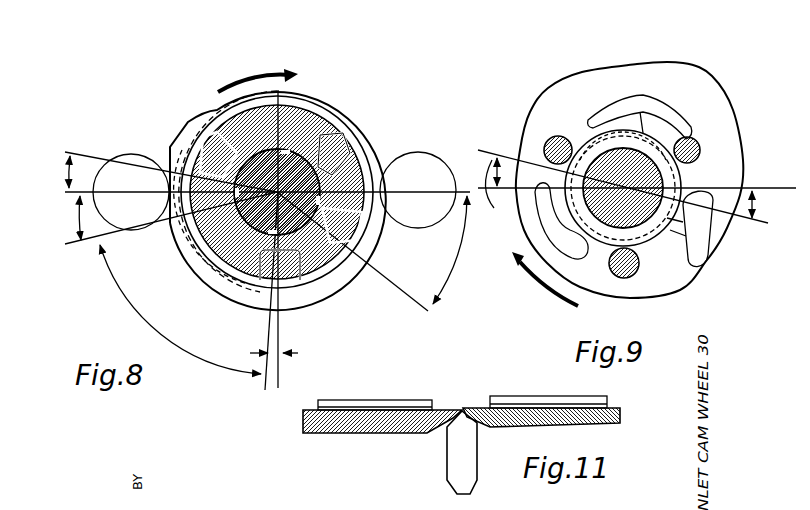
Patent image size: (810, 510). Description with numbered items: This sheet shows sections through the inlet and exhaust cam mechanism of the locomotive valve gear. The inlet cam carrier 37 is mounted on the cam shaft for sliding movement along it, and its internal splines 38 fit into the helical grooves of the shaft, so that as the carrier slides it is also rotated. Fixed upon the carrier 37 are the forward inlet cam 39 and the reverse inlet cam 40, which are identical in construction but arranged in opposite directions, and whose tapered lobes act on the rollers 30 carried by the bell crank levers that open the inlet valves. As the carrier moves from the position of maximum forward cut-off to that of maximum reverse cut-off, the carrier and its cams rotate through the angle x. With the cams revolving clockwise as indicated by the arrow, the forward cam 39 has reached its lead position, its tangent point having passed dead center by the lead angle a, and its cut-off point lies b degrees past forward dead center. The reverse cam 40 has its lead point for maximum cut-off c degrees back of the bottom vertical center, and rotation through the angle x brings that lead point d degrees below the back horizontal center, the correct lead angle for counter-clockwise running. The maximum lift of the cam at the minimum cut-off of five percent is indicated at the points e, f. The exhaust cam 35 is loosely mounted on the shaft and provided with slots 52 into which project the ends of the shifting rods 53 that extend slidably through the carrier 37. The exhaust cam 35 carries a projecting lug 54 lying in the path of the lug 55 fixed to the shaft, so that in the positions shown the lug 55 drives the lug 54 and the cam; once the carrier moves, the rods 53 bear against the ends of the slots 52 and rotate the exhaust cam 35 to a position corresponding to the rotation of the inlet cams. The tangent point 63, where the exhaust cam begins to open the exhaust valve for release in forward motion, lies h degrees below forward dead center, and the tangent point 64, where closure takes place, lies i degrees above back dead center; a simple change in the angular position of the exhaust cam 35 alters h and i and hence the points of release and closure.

In FIG. 8, the roller 30 is at (274, 191).
In FIG. 11, the roller 30 is at (450, 457).
In FIG. 9, the exhaust cam 35 is at (690, 100).
In FIG. 8, the inlet cam carrier 37 is at (342, 109).
In FIG. 8, the internal splines 38 is at (358, 233).
In FIG. 8, the inlet cam 39 is at (332, 282).
In FIG. 8, the inlet cam 40 is at (172, 142).
In FIG. 11, the inlet cam 40 is at (461, 453).
In FIG. 9, the slots 52 is at (607, 105).
In FIG. 9, the shifting rods 53 is at (547, 142).
In FIG. 9, the projecting lug 54 is at (694, 262).
In FIG. 9, the lug 55 is at (655, 117).
In FIG. 9, the tangent point 63 is at (735, 215).
In FIG. 9, the tangent point 64 is at (507, 147).
In FIG. 8, the lead angle a is at (78, 168).
In FIG. 8, the cut-off angle b is at (465, 228).
In FIG. 8, the lead point offset c is at (280, 354).
In FIG. 8, the reverse lead angle d is at (78, 235).
In FIG. 8, the maximum lift point e is at (198, 268).
In FIG. 8, the maximum lift point f is at (193, 273).
In FIG. 9, the release angle h is at (760, 211).
In FIG. 9, the closure angle i is at (491, 189).
In FIG. 8, the angle of rotation x is at (180, 309).